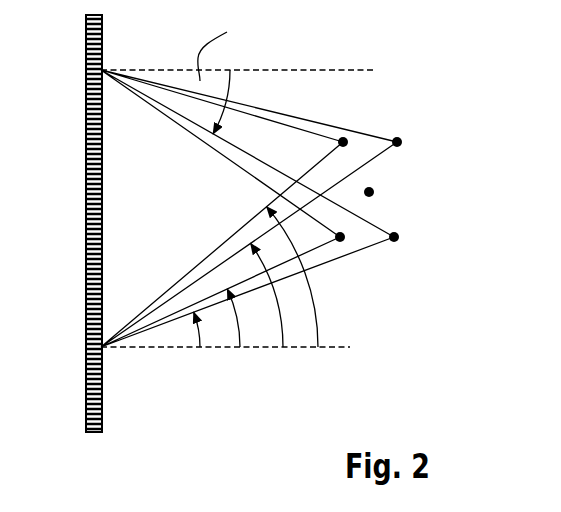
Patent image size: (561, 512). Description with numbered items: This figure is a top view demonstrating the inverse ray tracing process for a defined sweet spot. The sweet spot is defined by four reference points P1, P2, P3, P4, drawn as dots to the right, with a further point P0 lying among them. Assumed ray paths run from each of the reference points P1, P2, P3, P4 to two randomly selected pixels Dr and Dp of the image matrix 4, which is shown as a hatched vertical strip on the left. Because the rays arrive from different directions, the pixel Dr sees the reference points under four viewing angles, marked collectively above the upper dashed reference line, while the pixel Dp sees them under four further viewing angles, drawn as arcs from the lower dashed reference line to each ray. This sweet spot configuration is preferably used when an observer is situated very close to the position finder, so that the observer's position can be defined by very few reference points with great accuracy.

The image matrix 4 is at (95, 241).
The pixel Dr is at (218, 122).
The pixel Dp is at (219, 250).
The reference point P0 is at (382, 189).
The reference point P1 is at (348, 259).
The reference point P2 is at (339, 116).
The reference point P3 is at (407, 116).
The reference point P4 is at (409, 259).